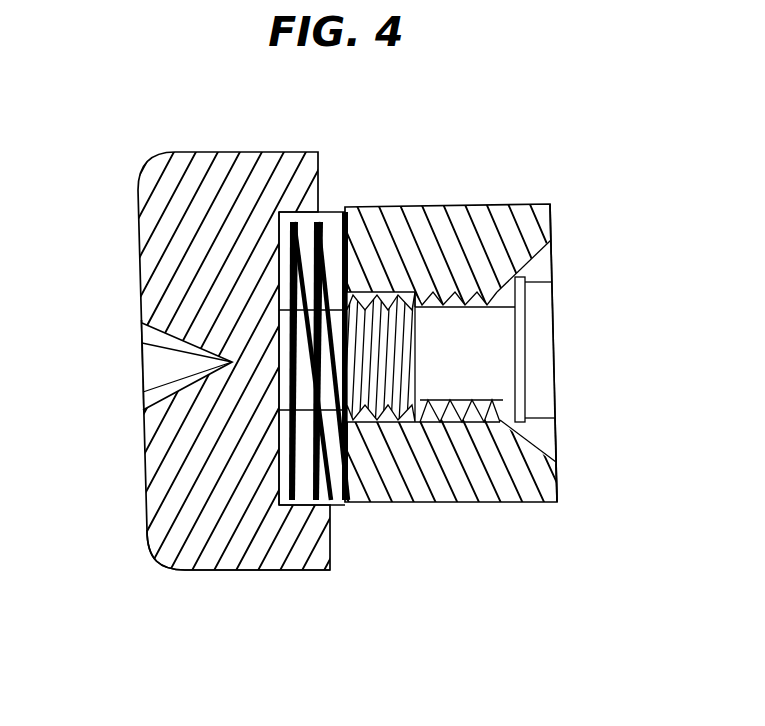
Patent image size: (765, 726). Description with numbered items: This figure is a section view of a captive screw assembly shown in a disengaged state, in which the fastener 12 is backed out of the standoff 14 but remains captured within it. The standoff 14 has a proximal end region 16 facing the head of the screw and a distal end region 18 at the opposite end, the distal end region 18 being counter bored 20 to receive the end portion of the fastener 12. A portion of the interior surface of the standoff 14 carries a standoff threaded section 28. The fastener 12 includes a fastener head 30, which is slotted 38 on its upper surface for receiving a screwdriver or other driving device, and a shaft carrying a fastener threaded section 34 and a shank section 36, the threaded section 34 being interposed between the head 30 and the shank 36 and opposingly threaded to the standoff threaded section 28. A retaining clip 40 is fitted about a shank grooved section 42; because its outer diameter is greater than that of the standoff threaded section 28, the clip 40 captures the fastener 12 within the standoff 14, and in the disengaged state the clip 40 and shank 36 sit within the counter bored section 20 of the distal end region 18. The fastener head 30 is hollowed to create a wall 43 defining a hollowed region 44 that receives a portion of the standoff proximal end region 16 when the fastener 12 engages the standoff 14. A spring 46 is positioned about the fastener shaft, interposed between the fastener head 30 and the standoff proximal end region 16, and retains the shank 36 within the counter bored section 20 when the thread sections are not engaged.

The fastener 12 is at (143, 149).
The standoff 14 is at (492, 203).
The proximal end region 16 is at (335, 208).
The distal end region 18 is at (550, 215).
The counter bored section 20 is at (555, 445).
The standoff threaded section 28 is at (427, 417).
The fastener head 30 is at (185, 570).
The fastener threaded section 34 is at (372, 425).
The shank section 36 is at (553, 302).
The slot 38 is at (142, 333).
The retaining clip 40 is at (520, 277).
The shank grooved section 42 is at (502, 385).
The wall 43 is at (297, 212).
The hollowed region 44 is at (345, 207).
The spring 46 is at (302, 510).